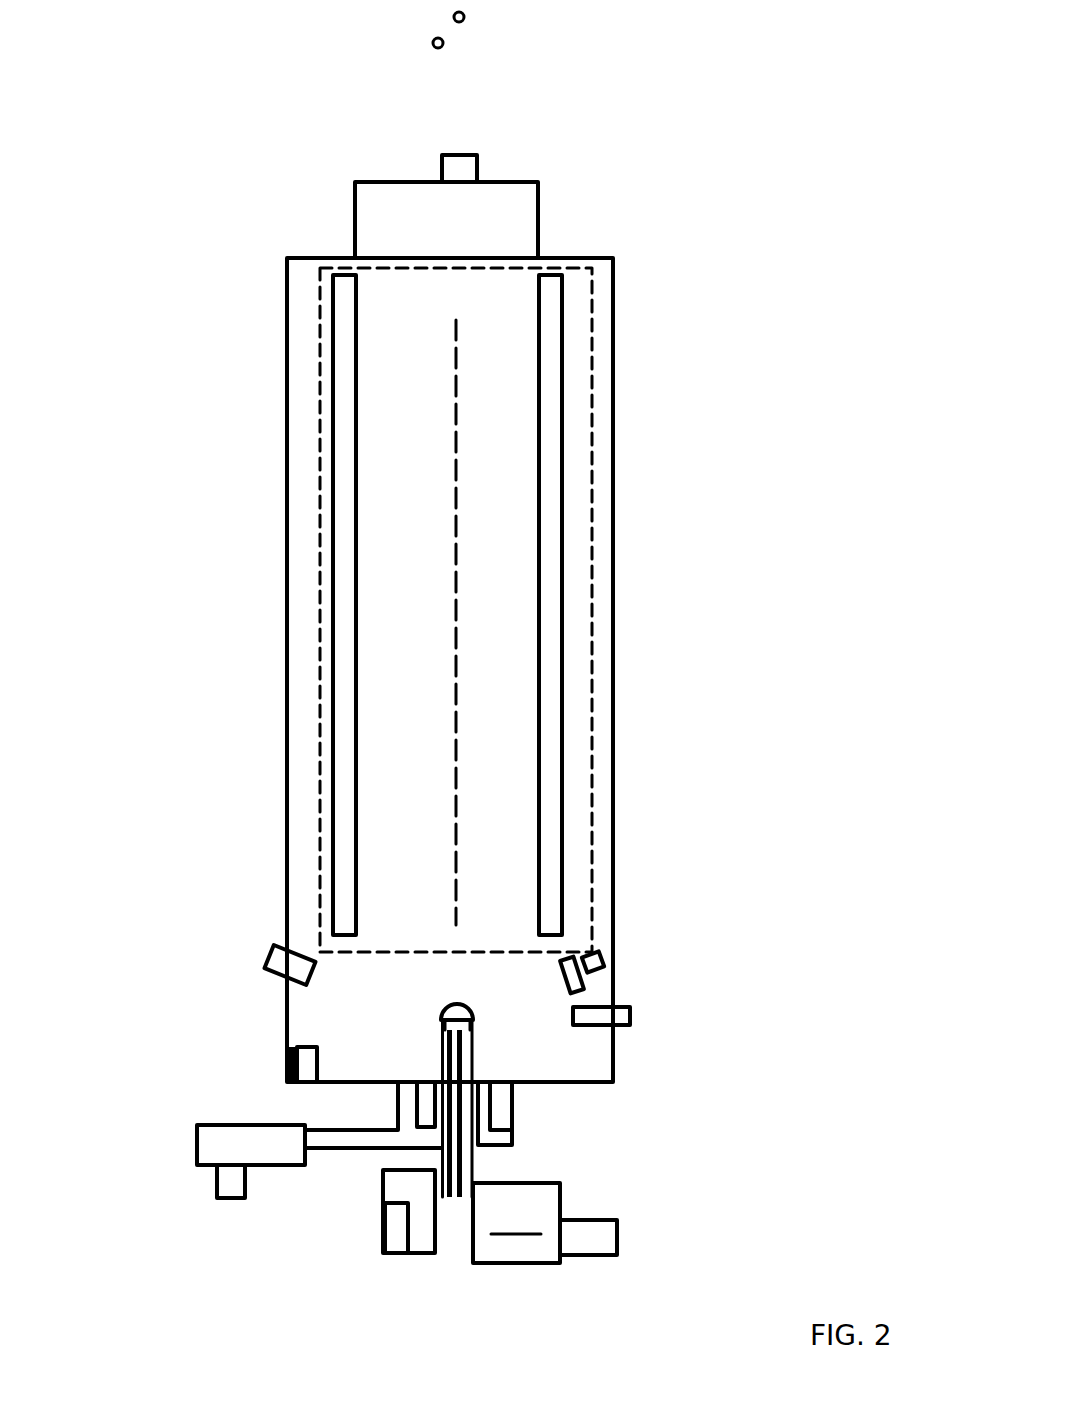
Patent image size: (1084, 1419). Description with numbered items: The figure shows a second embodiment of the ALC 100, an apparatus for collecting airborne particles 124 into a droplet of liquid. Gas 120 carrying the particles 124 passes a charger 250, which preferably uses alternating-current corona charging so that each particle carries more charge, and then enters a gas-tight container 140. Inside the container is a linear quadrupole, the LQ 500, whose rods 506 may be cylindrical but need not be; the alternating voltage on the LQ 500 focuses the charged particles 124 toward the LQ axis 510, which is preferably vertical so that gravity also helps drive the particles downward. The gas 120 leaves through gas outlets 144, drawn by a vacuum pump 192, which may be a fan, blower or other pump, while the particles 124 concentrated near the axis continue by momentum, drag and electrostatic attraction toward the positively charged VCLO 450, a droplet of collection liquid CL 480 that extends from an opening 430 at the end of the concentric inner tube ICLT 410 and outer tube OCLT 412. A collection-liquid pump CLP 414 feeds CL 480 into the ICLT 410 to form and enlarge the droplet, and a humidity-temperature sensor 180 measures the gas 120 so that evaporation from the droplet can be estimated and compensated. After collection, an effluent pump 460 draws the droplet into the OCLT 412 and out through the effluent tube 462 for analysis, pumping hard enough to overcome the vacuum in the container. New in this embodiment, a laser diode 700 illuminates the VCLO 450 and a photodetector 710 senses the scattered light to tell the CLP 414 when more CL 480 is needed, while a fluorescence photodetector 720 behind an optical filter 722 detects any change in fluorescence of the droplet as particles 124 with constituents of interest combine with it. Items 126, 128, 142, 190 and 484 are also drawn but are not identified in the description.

The ALC 100 is at (735, 82).
The gas 120 is at (529, 106).
The particles 124 is at (465, 20).
The cap 126 is at (460, 167).
The fitting 128 is at (225, 1193).
The gas-tight container 140 is at (615, 548).
The chamber 142 is at (462, 260).
The gas outlets 144 is at (400, 1083).
The humidity-temperature sensor 180 is at (285, 1068).
The tubing 190 is at (353, 1137).
The vacuum pump 192 is at (210, 1150).
The charger 250 is at (452, 240).
The ICLT 410 is at (473, 1162).
The OCLT 412 is at (442, 1032).
The CLP 414 is at (590, 1245).
The opening 430 is at (475, 1022).
The VCLO 450 is at (440, 1015).
The effluent pump 460 is at (420, 1233).
The effluent tube 462 is at (393, 1240).
The CL 480 is at (516, 1223).
The connection 484 is at (560, 1188).
The LQ 500 is at (320, 473).
The rods 506 is at (347, 580).
The LQ axis 510 is at (457, 855).
The laser diode 700 is at (630, 1020).
The photodetector 710 is at (270, 955).
The fluorescence photodetector 720 is at (608, 963).
The optical filter 722 is at (585, 993).